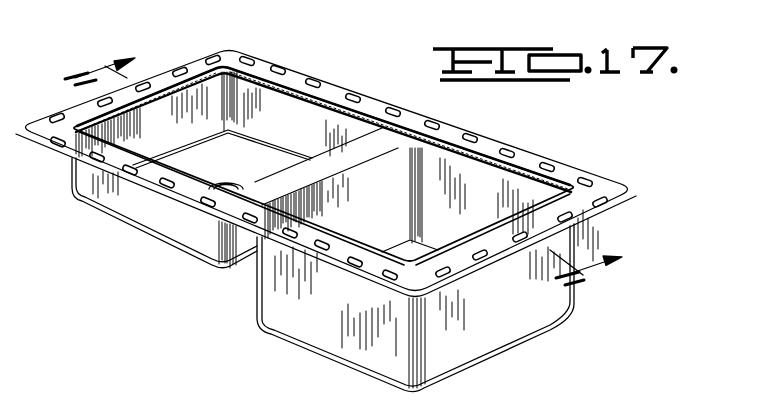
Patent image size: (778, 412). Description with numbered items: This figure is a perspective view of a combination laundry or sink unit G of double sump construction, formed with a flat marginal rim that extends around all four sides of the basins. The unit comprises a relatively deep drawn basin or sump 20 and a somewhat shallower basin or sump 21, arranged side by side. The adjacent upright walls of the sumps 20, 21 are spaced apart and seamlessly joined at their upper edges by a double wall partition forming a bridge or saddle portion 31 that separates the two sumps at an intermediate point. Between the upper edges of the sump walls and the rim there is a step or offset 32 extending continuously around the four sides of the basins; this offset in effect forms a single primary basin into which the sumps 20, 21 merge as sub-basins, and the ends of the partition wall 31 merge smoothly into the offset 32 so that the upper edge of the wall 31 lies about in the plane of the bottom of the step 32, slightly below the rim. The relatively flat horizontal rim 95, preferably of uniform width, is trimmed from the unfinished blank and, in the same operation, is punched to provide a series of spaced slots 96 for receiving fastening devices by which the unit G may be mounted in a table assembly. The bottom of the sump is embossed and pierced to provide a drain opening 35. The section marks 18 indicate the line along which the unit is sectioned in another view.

The section line 18- 18 is at (369, 159).
The flat horizontal rim 95 is at (197, 67).
The spaced slots 96 is at (388, 274).
The combination laundry or sink unit G is at (326, 204).
The step or offset 32 is at (363, 113).
The shallower basin or sump 21 is at (252, 92).
The partition wall or bridge 31 is at (327, 170).
The deep drawn basin or sump 20 is at (500, 182).
The drain opening 35 is at (235, 156).